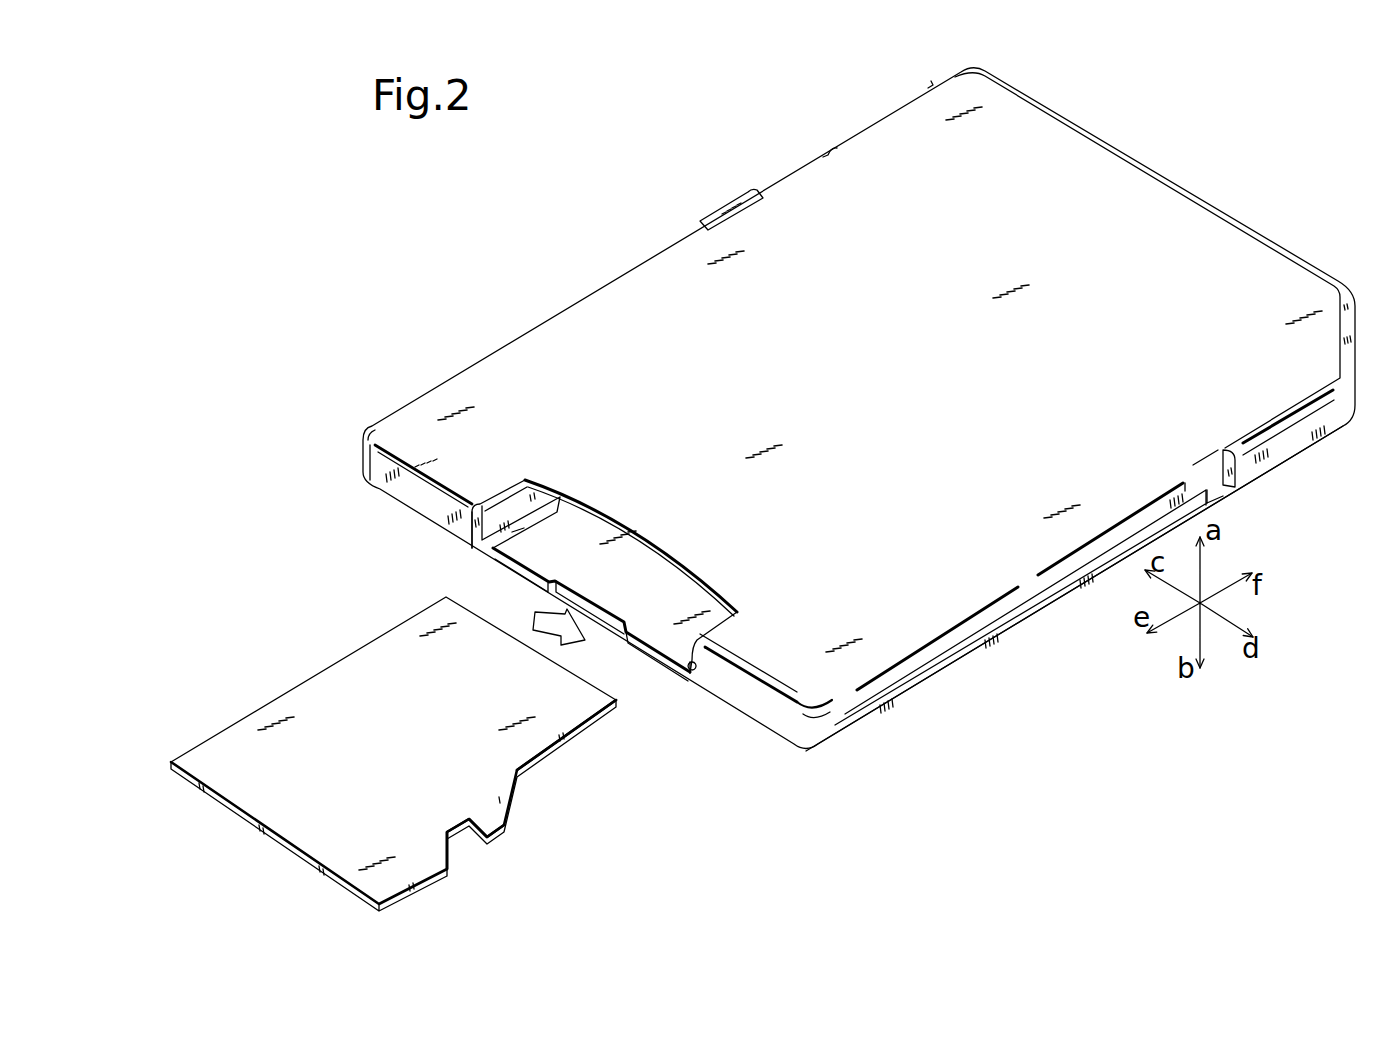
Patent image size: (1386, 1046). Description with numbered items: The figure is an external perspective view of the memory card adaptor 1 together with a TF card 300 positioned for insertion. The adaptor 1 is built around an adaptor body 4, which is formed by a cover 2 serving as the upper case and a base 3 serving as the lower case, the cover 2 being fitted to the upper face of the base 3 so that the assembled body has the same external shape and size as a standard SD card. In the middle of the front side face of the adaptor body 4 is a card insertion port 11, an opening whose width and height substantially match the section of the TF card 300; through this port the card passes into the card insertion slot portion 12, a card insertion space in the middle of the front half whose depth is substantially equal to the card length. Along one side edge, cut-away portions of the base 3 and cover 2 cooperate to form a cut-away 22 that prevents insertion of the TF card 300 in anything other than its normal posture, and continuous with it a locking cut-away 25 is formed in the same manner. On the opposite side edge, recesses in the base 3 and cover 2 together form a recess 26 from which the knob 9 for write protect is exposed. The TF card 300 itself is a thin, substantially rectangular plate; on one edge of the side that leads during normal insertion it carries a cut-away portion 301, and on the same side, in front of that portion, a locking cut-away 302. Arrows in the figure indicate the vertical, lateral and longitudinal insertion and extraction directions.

The memory card adaptor 1 is at (590, 222).
The cover 2 is at (922, 593).
The base 3 is at (1010, 627).
The adaptor body 4 is at (1053, 733).
The knob for write protect 9 is at (704, 198).
The card insertion port 11 is at (670, 635).
The card insertion slot portion 12 is at (627, 582).
The cut-away 22 is at (1353, 360).
The locking cut-away 25 is at (1217, 483).
The recess 26 is at (783, 173).
The TF card 300 is at (423, 761).
The cut-away portion 301 is at (562, 763).
The locking cut-away 302 is at (447, 857).